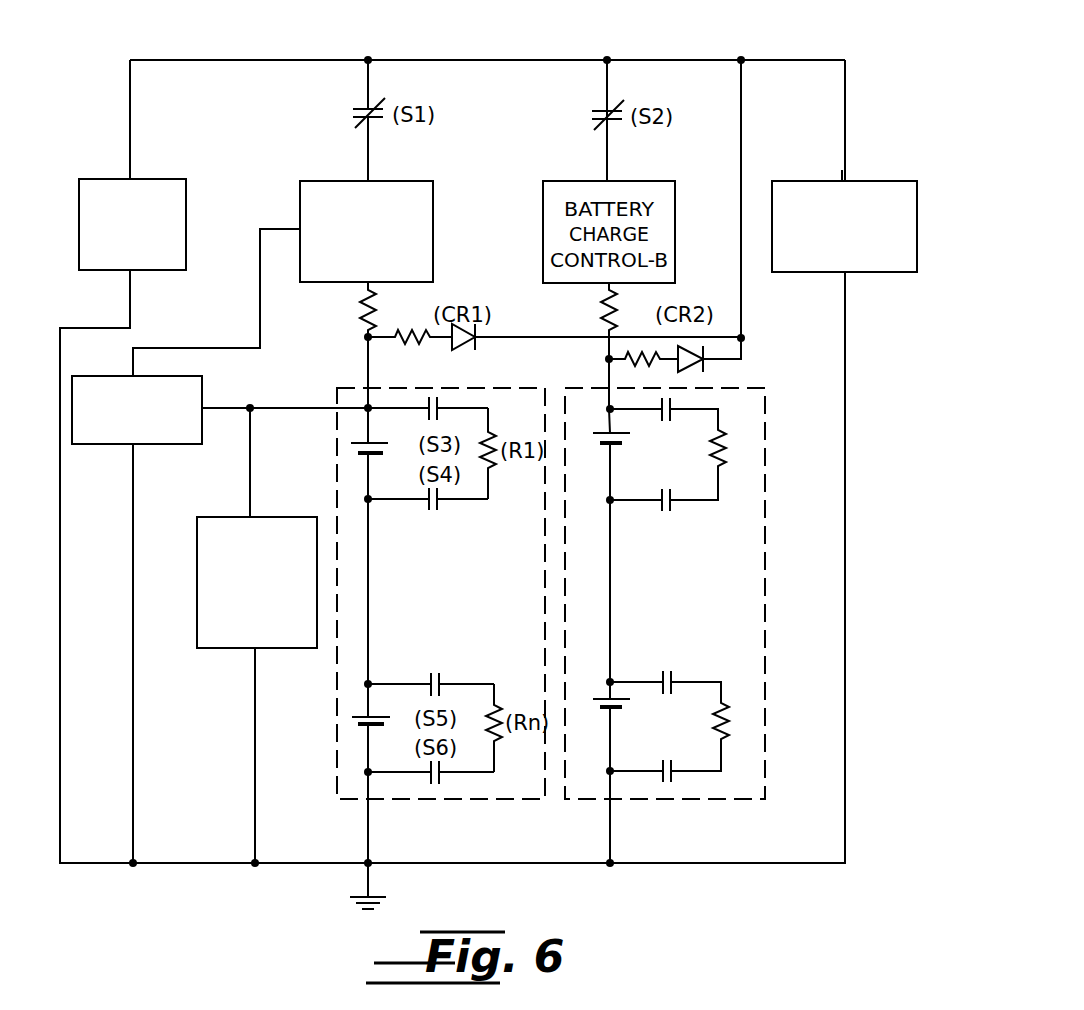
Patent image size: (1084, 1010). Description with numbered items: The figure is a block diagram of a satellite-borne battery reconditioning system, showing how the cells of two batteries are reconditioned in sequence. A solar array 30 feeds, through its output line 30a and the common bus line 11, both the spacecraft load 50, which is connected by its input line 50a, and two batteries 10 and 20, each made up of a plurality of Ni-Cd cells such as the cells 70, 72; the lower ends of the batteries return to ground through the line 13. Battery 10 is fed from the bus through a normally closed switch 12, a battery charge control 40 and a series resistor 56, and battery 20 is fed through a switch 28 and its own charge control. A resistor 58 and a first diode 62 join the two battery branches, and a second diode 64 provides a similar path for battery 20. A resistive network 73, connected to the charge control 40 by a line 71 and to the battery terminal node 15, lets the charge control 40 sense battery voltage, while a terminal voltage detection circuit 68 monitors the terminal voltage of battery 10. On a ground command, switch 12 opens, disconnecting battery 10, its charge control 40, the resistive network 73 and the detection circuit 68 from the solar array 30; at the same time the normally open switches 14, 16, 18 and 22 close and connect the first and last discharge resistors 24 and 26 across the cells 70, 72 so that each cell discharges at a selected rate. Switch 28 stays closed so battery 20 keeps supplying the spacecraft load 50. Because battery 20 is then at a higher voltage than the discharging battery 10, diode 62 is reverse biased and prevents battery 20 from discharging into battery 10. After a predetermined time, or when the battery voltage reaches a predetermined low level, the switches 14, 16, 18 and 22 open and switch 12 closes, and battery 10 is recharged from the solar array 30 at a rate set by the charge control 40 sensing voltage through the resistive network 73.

The battery 10 is at (352, 643).
The bus line 11 is at (372, 58).
The switch 12 is at (352, 110).
The ground return line 13 is at (366, 860).
The switch 14 is at (425, 395).
The battery terminal node 15 is at (366, 410).
The switch 16 is at (428, 512).
The switch 18 is at (440, 672).
The battery 20 is at (733, 632).
The switch 22 is at (434, 790).
The resistor 24 is at (494, 470).
The resistor 26 is at (497, 740).
The switch 28 is at (590, 112).
The solar array 30 is at (186, 224).
The solar array output line 30a is at (131, 178).
The battery charge control 40 is at (308, 180).
The spacecraft load 50 is at (917, 220).
The spacecraft load input line 50a is at (843, 181).
The resistor 56 is at (352, 312).
The resistor 58 is at (410, 317).
The diode 62 is at (468, 350).
The diode 64 is at (698, 372).
The terminal voltage detection circuit 68 is at (277, 516).
The cell 70 is at (384, 445).
The connection line 71 is at (196, 347).
The cell 72 is at (365, 713).
The resistive network 73 is at (166, 445).